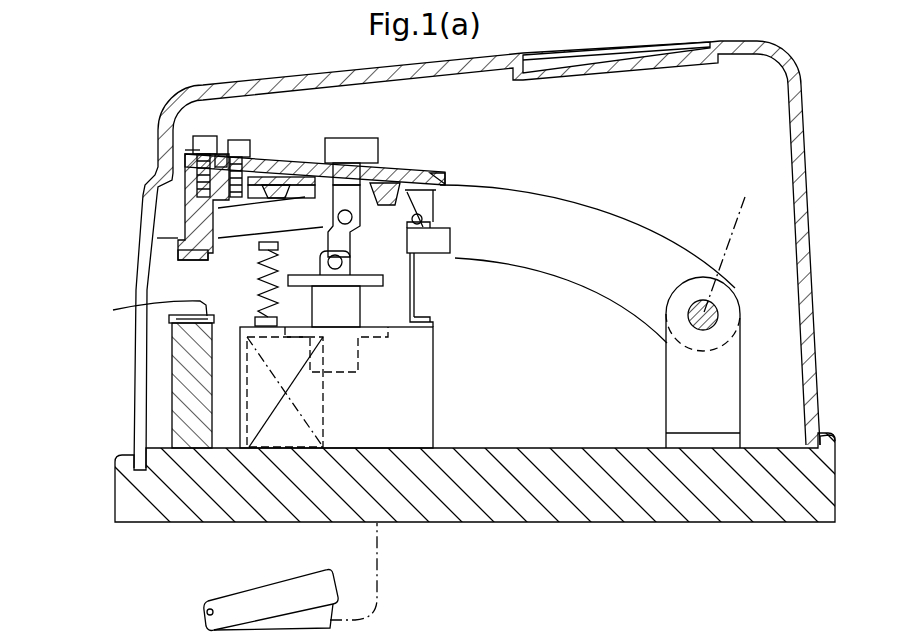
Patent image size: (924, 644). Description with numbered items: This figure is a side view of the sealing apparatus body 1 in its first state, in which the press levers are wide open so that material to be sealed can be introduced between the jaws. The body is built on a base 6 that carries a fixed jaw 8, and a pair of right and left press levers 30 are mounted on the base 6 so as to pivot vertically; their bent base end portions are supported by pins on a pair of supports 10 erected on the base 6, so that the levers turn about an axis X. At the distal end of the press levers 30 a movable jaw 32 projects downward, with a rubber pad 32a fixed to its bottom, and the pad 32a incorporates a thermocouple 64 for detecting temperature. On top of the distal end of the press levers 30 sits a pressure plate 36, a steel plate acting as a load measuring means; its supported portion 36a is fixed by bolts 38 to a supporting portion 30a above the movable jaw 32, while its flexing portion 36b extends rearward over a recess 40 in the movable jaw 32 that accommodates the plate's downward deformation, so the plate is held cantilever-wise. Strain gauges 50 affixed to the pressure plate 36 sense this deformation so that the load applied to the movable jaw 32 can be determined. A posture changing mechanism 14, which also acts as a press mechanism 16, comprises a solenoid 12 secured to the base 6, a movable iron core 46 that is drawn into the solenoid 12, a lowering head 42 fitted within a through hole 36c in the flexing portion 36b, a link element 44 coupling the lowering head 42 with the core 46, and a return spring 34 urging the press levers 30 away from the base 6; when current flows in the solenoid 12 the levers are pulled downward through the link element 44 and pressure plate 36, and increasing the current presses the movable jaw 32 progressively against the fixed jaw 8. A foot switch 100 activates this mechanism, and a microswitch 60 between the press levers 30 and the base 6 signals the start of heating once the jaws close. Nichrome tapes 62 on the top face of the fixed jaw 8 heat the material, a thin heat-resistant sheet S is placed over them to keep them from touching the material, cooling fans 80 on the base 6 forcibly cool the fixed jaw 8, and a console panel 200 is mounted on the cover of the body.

The sealing apparatus body 1 is at (88, 127).
The base 6 is at (585, 510).
The fixed jaw 8 is at (177, 388).
The support 10 is at (677, 383).
The solenoid 12 is at (423, 397).
The posture changing mechanism 14 is at (452, 331).
The press mechanism 16 is at (422, 319).
The press lever 30 is at (598, 217).
The supporting portion 30a is at (187, 150).
The movable jaw 32 is at (184, 206).
The rubber pad 32a is at (184, 245).
The return spring 34 is at (264, 300).
The pressure plate 36 is at (422, 168).
The supported portion 36a is at (220, 155).
The flexing portion 36b is at (442, 180).
The through hole 36c is at (416, 166).
The bolt 38 is at (203, 135).
The recess 40 is at (250, 177).
The lowering head 42 is at (350, 147).
The link element 44 is at (340, 235).
The movable iron core 46 is at (350, 301).
The strain gauge 50 is at (316, 160).
The microswitch 60 is at (445, 242).
The nichrome tape 62 is at (165, 313).
The thermocouple 64 is at (200, 266).
The cooling fan 80 is at (323, 424).
The foot switch 100 is at (243, 600).
The console panel 200 is at (562, 52).
The heat-resistant sheet S is at (170, 327).
The axis X is at (727, 256).